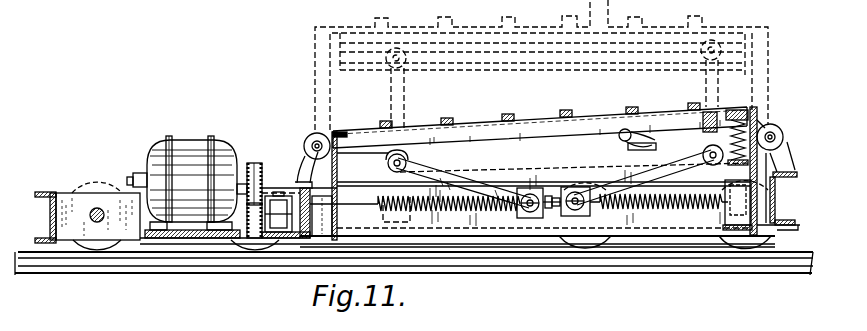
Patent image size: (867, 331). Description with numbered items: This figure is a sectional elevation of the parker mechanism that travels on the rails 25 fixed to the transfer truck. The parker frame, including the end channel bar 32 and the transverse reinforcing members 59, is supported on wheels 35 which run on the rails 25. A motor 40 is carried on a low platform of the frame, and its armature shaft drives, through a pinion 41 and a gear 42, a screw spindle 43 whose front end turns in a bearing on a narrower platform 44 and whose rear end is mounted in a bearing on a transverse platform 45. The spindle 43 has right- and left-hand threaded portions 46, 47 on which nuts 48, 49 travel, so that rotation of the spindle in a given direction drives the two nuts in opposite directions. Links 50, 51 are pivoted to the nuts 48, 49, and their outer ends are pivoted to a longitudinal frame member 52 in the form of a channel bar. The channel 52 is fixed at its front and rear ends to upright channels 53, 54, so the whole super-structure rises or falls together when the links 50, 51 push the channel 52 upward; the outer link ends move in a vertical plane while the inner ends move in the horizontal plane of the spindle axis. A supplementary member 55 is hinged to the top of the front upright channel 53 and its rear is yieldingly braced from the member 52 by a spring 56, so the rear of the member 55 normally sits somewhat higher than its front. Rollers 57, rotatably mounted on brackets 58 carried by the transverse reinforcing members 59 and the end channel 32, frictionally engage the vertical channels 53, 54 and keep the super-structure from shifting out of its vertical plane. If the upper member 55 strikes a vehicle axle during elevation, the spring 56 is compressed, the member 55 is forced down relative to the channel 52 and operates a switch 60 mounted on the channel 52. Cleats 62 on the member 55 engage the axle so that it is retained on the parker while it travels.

The rails 25 is at (643, 250).
The channel bar 32 is at (778, 196).
The wheels 35 is at (92, 184).
The motor 40 is at (181, 146).
The pinion 41 is at (256, 161).
The gear 42 is at (256, 243).
The spindle 43 is at (354, 214).
The platform 44 is at (292, 245).
The transverse platform 45 is at (747, 237).
The thread portion 46 is at (485, 212).
The thread portion 47 is at (693, 207).
The nut 48 is at (538, 218).
The nut 49 is at (585, 217).
The links 50 is at (453, 172).
The links 51 is at (677, 160).
The frame member 52 is at (349, 166).
The upright channel 53 is at (331, 128).
The upright channel 54 is at (760, 124).
The supplementary member 55 is at (422, 130).
The spring 56 is at (726, 138).
The rollers 57 is at (310, 140).
The brackets 58 is at (787, 151).
The transverse reinforcing members 59 is at (303, 186).
The switch 60 is at (649, 127).
The cleats 62 is at (510, 118).